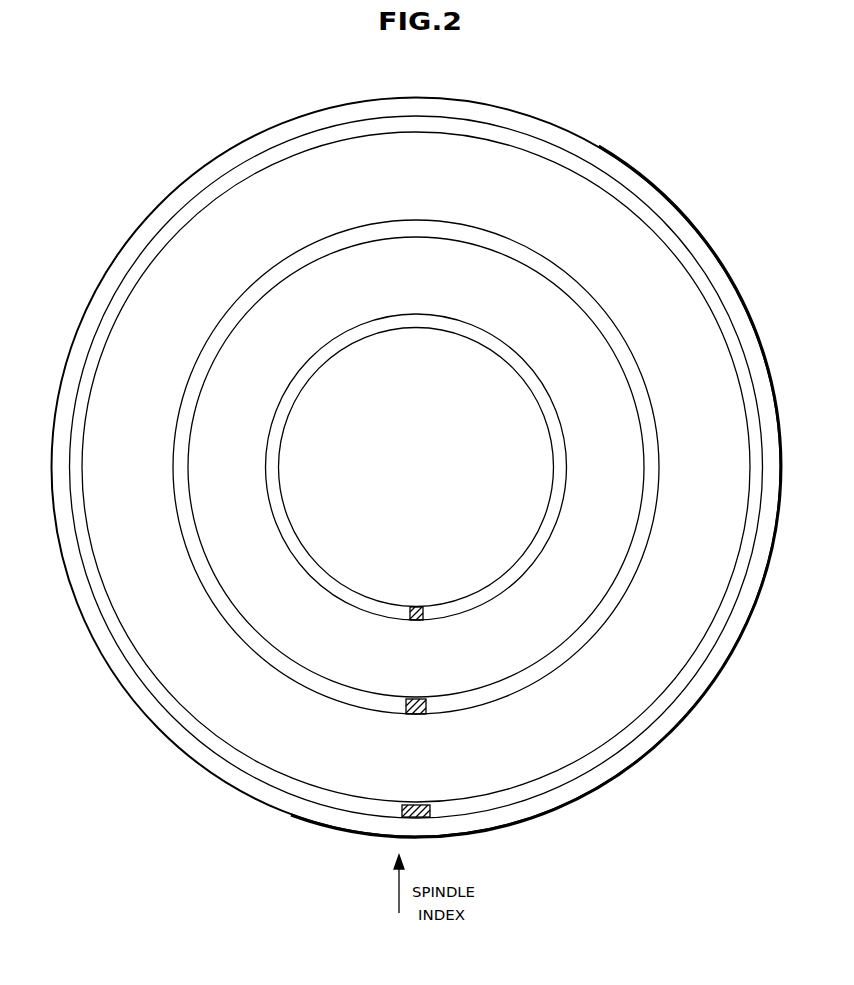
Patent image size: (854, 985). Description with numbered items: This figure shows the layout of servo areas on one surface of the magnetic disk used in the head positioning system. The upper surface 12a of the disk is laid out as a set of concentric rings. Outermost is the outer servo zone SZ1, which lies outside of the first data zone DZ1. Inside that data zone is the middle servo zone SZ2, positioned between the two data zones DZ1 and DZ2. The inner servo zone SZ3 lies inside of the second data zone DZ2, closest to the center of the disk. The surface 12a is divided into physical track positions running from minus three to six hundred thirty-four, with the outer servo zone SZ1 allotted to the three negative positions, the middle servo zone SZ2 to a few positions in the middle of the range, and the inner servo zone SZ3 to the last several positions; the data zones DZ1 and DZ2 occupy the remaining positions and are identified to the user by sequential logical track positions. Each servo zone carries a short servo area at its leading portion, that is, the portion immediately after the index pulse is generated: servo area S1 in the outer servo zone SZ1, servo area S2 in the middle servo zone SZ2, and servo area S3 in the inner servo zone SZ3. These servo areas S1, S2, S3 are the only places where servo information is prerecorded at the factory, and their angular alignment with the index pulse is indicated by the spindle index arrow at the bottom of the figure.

The upper surface of the disk 12a is at (653, 202).
The outer servo zone SZ1 is at (188, 208).
The middle servo zone SZ2 is at (237, 313).
The inner servo zone SZ3 is at (298, 383).
The data zone DZ1 is at (424, 192).
The data zone DZ2 is at (419, 288).
The servo area S1 is at (420, 805).
The servo area S2 is at (417, 697).
The servo area S3 is at (418, 605).